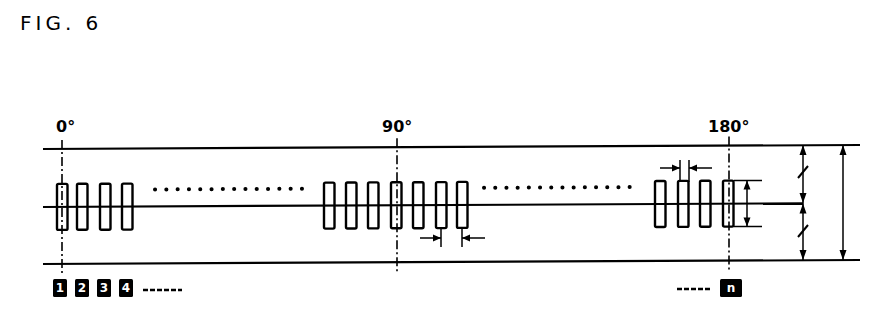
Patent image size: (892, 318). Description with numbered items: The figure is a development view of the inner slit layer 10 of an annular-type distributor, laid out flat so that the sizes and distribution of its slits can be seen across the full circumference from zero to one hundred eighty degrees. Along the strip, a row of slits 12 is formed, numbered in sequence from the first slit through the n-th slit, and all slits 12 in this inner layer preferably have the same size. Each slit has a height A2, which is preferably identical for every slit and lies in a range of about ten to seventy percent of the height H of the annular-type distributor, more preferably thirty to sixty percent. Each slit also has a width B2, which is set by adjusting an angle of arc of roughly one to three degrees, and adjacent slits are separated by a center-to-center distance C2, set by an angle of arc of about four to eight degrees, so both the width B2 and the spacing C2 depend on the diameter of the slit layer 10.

The inner slit layer 10 is at (482, 147).
The slit 12 is at (132, 183).
The height of the slits A2 is at (754, 204).
The width of the slits B2 is at (681, 168).
The distance between centers of two adjacent slits C2 is at (462, 238).
The height of the annular-type distributor H is at (849, 202).